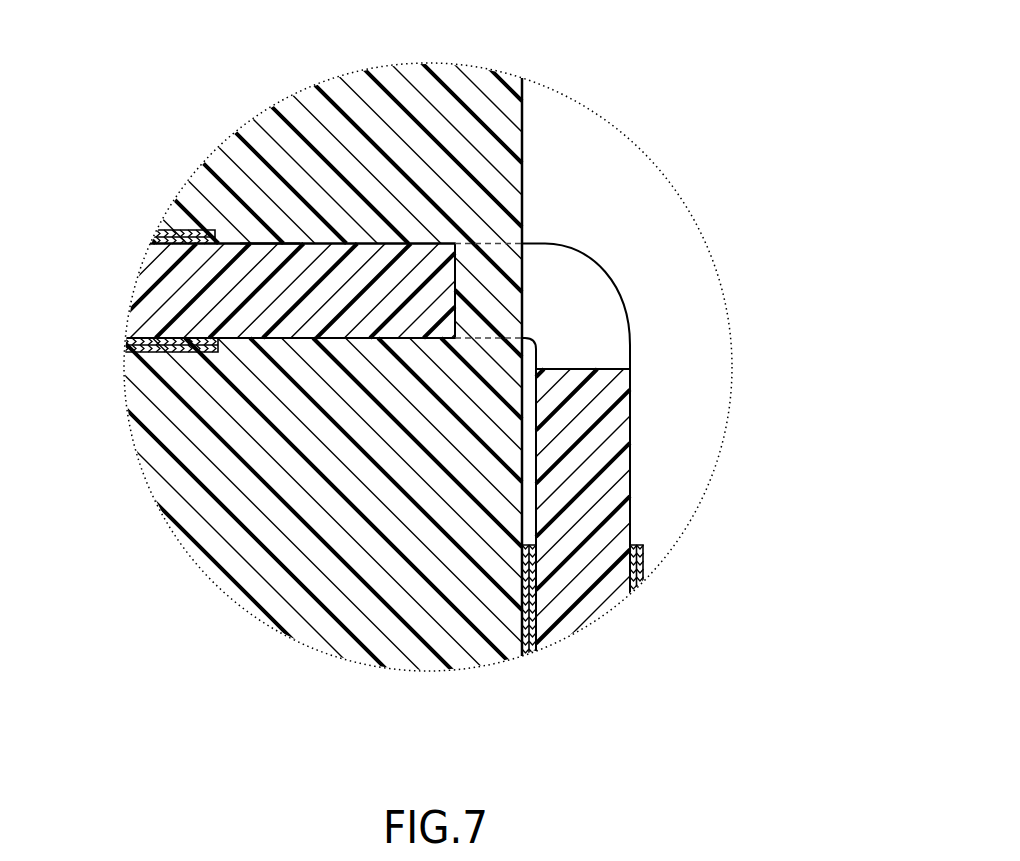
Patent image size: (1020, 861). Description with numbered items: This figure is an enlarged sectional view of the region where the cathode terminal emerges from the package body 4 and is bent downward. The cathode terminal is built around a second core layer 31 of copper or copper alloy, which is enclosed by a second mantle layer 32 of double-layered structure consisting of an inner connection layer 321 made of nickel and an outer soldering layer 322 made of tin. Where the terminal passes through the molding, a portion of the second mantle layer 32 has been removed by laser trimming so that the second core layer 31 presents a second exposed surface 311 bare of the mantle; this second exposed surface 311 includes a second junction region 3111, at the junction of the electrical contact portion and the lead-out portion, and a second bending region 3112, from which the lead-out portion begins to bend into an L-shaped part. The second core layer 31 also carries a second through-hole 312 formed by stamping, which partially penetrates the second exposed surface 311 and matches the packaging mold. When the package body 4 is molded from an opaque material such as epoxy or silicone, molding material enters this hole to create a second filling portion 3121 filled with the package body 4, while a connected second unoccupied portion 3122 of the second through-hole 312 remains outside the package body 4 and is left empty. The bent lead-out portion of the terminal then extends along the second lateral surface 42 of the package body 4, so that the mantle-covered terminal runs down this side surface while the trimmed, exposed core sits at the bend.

The package body 4 is at (401, 94).
The second lateral surface 42 is at (535, 108).
The second core layer 31 is at (162, 312).
The second exposed surface 311 is at (292, 58).
The second junction region 3111 is at (254, 238).
The second bending region 3112 is at (630, 432).
The second through-hole 312 is at (803, 190).
The second filling portion 3121 is at (473, 260).
The second unoccupied portion 3122 is at (595, 328).
The second mantle layer 32 is at (75, 190).
The inner connection layer 321 is at (166, 241).
The outer soldering layer 322 is at (173, 231).